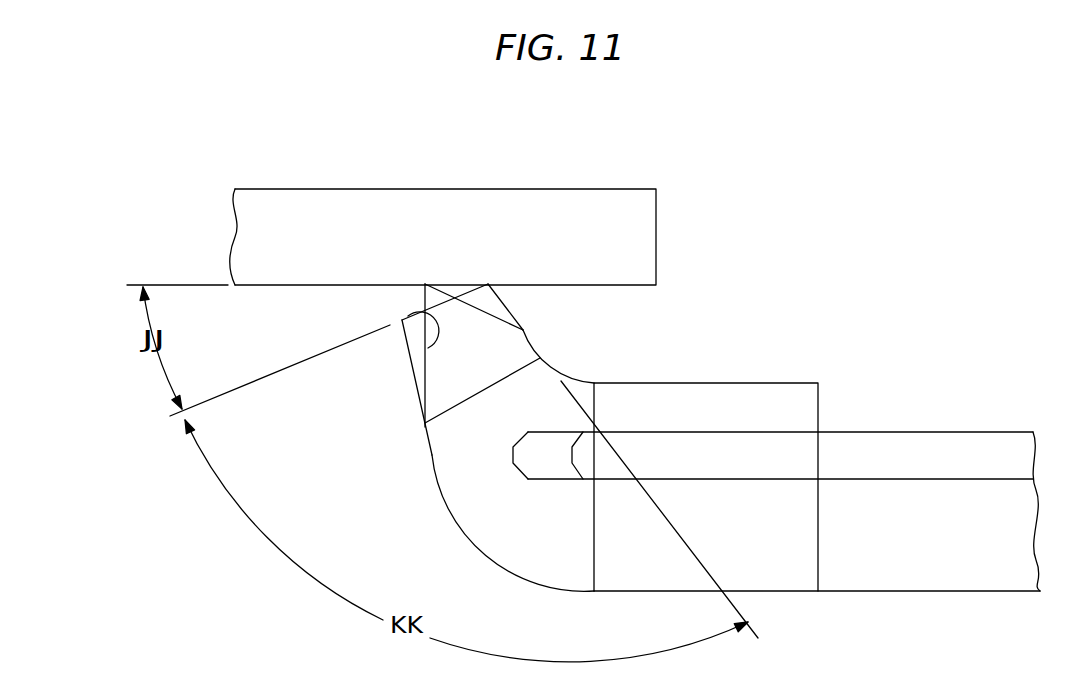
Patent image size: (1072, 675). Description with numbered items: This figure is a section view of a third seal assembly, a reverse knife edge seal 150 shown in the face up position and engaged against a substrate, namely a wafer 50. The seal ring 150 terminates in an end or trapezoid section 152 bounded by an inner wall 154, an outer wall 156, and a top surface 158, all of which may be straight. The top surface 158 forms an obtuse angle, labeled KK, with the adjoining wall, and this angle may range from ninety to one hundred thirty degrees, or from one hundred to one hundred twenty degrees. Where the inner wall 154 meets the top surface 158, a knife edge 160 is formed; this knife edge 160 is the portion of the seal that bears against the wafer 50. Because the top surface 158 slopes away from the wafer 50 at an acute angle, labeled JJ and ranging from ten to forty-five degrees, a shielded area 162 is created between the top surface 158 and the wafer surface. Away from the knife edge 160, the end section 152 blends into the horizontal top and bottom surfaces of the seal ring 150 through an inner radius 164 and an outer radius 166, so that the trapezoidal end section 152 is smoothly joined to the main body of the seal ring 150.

The wafer 50 is at (340, 220).
The reverse knife edge seal 150 is at (833, 315).
The end or trapezoid section 152 is at (422, 420).
The inner wall 154 is at (412, 365).
The outer wall 156 is at (523, 330).
The top surface 158 is at (422, 352).
The knife edge 160 is at (493, 288).
The shielded area 162 is at (437, 298).
The inner radius 164 is at (567, 373).
The outer radius 166 is at (467, 533).